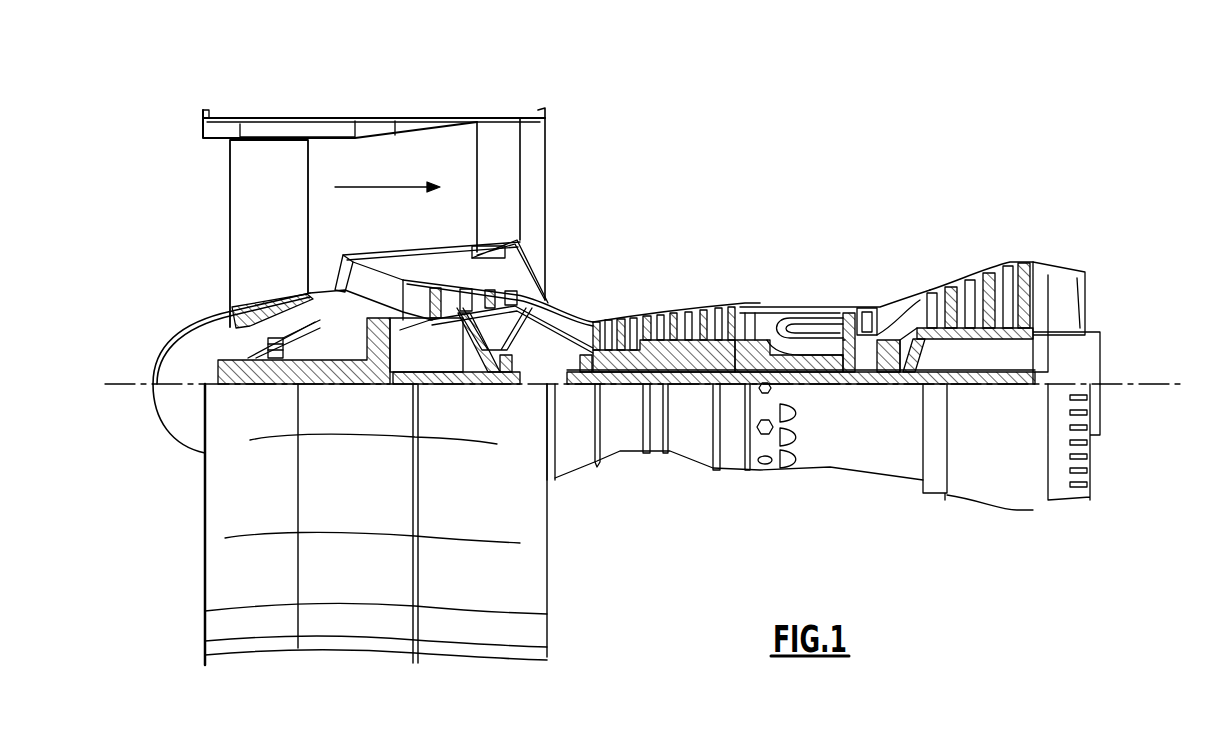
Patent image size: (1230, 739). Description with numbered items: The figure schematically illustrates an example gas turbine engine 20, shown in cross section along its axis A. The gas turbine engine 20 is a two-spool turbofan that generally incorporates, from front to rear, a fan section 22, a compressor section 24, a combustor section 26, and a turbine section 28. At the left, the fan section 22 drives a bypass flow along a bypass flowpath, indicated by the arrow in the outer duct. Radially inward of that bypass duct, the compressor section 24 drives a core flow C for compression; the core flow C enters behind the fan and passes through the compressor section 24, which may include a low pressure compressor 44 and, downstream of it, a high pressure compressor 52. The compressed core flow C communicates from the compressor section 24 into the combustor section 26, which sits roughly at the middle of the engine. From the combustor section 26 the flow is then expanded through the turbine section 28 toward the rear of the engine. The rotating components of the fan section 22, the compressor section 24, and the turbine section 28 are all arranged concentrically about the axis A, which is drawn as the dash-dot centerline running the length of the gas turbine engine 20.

The gas turbine engine 20 is at (814, 157).
The fan section 22 is at (305, 104).
The compressor section 24 is at (598, 288).
The combustor section 26 is at (804, 280).
The turbine section 28 is at (946, 243).
The low pressure compressor 44 is at (483, 290).
The high pressure compressor 52 is at (682, 318).
The core flow C is at (370, 284).
The axis A is at (1180, 384).